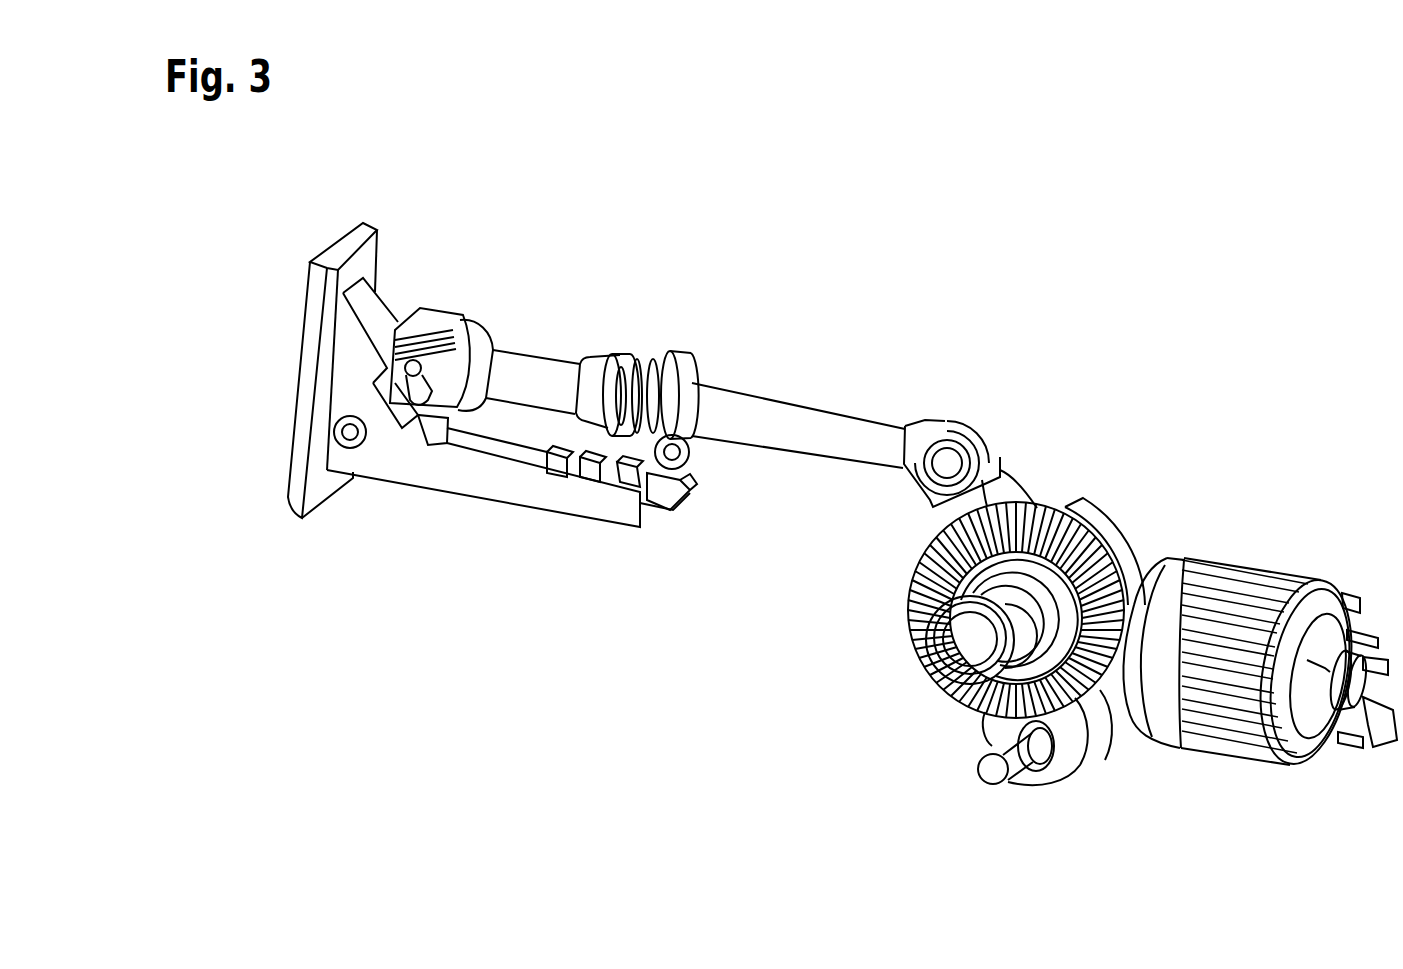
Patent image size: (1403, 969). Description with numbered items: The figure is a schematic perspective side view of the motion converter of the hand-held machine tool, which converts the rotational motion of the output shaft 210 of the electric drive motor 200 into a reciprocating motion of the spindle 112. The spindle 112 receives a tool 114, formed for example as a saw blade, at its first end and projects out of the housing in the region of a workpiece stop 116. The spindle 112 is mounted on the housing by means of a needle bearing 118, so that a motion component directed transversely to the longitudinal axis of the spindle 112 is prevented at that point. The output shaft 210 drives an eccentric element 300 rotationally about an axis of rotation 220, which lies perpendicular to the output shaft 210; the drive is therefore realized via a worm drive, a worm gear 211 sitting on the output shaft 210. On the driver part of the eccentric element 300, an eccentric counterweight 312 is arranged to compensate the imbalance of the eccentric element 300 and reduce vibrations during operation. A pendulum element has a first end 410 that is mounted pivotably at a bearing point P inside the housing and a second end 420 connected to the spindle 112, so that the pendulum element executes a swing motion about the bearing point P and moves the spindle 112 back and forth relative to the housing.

The workpiece stop 116 is at (372, 322).
The needle bearing 118 is at (622, 350).
The spindle 112 is at (815, 423).
The tool 114 is at (947, 463).
The second end 420 is at (1007, 490).
The eccentric counterweight 312 is at (1107, 503).
The worm gear 211 is at (1143, 563).
The electric drive motor 200 is at (1267, 577).
The eccentric element 300 is at (868, 617).
The axis of rotation 220 is at (975, 641).
The output shaft 210 is at (1116, 696).
The first end 410 is at (1048, 770).
The bearing point P is at (995, 770).